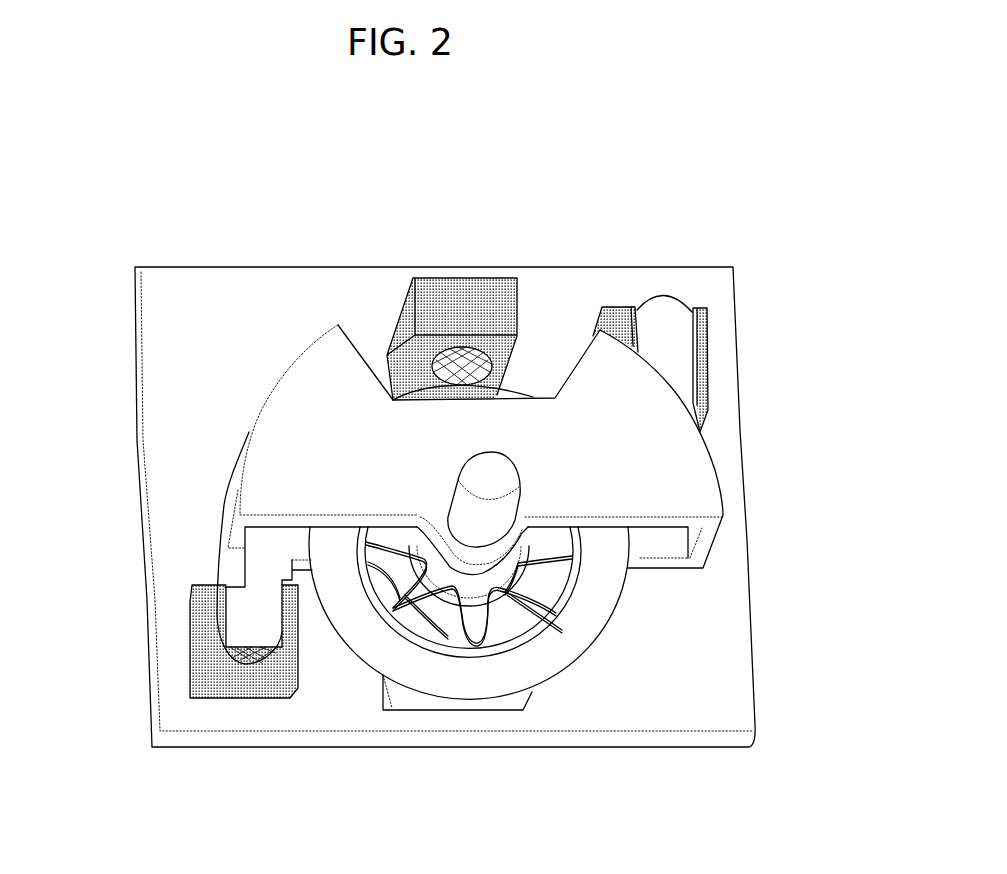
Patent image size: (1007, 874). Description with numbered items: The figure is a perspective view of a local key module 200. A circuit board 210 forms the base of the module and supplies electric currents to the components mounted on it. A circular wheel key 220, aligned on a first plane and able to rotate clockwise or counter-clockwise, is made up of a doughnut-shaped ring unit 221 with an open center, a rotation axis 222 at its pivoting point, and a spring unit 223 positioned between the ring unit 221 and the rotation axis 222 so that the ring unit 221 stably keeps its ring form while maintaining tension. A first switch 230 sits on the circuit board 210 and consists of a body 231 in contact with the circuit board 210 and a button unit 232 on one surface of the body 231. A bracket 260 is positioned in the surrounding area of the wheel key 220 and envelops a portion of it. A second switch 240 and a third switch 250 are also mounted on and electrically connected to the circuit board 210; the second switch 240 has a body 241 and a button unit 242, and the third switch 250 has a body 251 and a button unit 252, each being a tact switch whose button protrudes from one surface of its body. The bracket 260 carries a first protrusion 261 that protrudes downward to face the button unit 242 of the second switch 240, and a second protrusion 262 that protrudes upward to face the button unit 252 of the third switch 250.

The local key module 200 is at (738, 134).
The circuit board 210 is at (262, 278).
The wheel key 220 is at (573, 691).
The ring unit 221 is at (550, 667).
The rotation axis 222 is at (508, 472).
The spring unit 223 is at (458, 622).
The first switch 230 is at (499, 295).
The body 231 is at (497, 292).
The button unit 232 is at (478, 360).
The second switch 240 is at (195, 720).
The body 241 is at (227, 678).
The button unit 242 is at (272, 665).
The third switch 250 is at (706, 307).
The body 251 is at (615, 313).
The button unit 252 is at (630, 308).
The bracket 260 is at (446, 445).
The first protrusion 261 is at (237, 610).
The second protrusion 262 is at (678, 312).